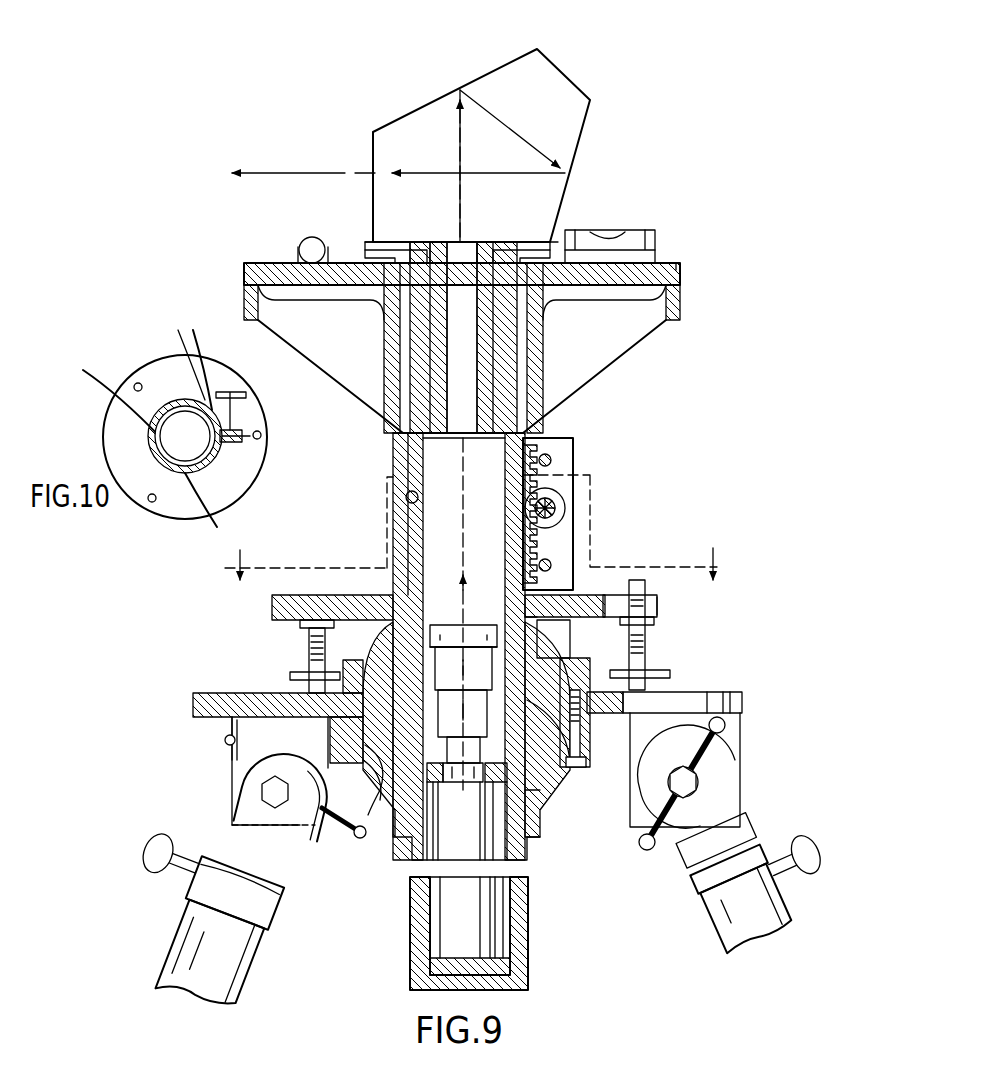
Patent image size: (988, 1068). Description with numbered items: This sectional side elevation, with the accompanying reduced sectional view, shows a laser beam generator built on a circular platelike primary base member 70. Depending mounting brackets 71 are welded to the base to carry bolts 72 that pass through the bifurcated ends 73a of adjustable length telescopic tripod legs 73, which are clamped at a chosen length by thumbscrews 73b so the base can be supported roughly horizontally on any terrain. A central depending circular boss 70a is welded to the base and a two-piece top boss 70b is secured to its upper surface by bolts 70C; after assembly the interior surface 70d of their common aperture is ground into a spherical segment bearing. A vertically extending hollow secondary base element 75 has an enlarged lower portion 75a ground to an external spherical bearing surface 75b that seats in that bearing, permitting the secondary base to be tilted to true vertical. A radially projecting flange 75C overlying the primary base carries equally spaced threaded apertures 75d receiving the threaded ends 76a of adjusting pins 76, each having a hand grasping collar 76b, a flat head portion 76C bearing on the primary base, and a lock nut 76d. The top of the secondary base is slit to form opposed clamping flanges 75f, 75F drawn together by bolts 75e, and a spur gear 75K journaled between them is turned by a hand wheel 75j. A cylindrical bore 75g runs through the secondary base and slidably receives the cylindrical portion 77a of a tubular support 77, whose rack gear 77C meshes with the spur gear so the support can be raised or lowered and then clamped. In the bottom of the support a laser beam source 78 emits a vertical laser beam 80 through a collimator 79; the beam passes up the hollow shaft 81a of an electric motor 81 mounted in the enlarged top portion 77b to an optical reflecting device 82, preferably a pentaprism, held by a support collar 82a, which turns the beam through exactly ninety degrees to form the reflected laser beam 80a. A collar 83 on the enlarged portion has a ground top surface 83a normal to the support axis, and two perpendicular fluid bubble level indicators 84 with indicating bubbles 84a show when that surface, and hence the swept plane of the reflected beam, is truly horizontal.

In FIG. 9, the primary base member 70 is at (738, 700).
In FIG. 9, the central depending circular boss 70a is at (565, 760).
In FIG. 9, the top boss 70b is at (570, 660).
In FIG. 9, the bolts 70C is at (545, 790).
In FIG. 9, the spherical segment bearing surface 70d is at (380, 760).
In FIG. 9, the depending mounting brackets 71 is at (240, 730).
In FIG. 9, the bolts 72 is at (262, 788).
In FIG. 9, the telescopic tripod legs 73 is at (258, 955).
In FIG. 9, the bifurcated ends 73a is at (300, 838).
In FIG. 9, the thumbscrews 73b is at (148, 845).
In FIG. 9, the secondary base element 75 is at (598, 590).
In FIG. 9, the lower portion of secondary base 75a is at (555, 800).
In FIG. 9, the external spherical bearing surface 75b is at (545, 660).
In FIG. 9, the radially projecting flange 75C is at (660, 605).
In FIG. 10, the threaded apertures 75d is at (134, 384).
In FIG. 9, the clamping bolts 75e is at (552, 460).
In FIG. 10, the clamping flanges 75f is at (248, 436).
In FIG. 9, the clamping flange 75F is at (573, 448).
In FIG. 10, the clamping flange 75F is at (215, 470).
In FIG. 9, the cylindrical bore 75g is at (406, 495).
In FIG. 10, the cylindrical bore 75g is at (129, 428).
In FIG. 9, the hand wheel 75j is at (562, 500).
In FIG. 10, the hand wheel 75j is at (236, 395).
In FIG. 9, the spur gear 75K is at (556, 512).
In FIG. 10, the spur gear 75K is at (245, 440).
In FIG. 9, the adjusting pins 76 is at (309, 650).
In FIG. 9, the threaded ends 76a is at (320, 595).
In FIG. 9, the hand grasping collar 76b is at (290, 676).
In FIG. 9, the flat head portion 76C is at (340, 693).
In FIG. 9, the lock nut 76d is at (300, 624).
In FIG. 9, the tubular support 77 is at (540, 440).
In FIG. 9, the cylindrical portion 77a is at (528, 918).
In FIG. 10, the cylindrical portion 77a is at (185, 455).
In FIG. 9, the enlarged top portion 77b is at (545, 360).
In FIG. 9, the rack gear 77C is at (590, 480).
In FIG. 10, the rack gear 77C is at (199, 349).
In FIG. 9, the laser beam source 78 is at (480, 910).
In FIG. 9, the collimator 79 is at (478, 625).
In FIG. 9, the laser beam 80 is at (455, 592).
In FIG. 9, the reflected laser beam 80a is at (298, 171).
In FIG. 9, the electric motor 81 is at (415, 340).
In FIG. 9, the hollow shaft 81a is at (505, 248).
In FIG. 9, the optical reflecting device 82 is at (572, 62).
In FIG. 9, the support collar 82a is at (548, 242).
In FIG. 9, the collar 83 is at (680, 272).
In FIG. 9, the ground top surface 83a is at (668, 262).
In FIG. 9, the fluid bubble level indicators 84 is at (318, 247).
In FIG. 9, the indicating bubbles 84a is at (305, 245).